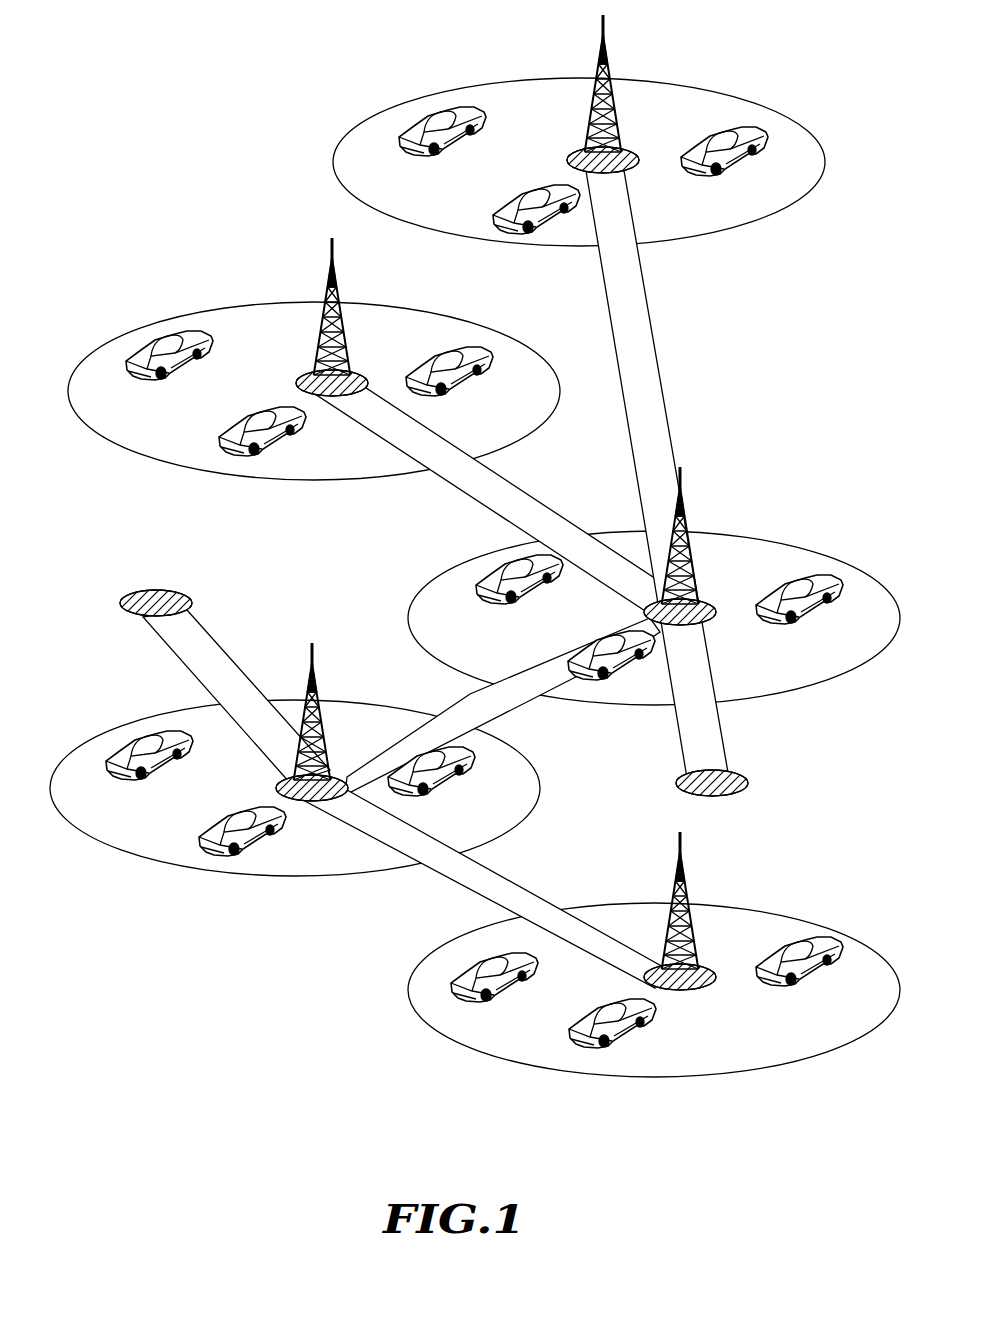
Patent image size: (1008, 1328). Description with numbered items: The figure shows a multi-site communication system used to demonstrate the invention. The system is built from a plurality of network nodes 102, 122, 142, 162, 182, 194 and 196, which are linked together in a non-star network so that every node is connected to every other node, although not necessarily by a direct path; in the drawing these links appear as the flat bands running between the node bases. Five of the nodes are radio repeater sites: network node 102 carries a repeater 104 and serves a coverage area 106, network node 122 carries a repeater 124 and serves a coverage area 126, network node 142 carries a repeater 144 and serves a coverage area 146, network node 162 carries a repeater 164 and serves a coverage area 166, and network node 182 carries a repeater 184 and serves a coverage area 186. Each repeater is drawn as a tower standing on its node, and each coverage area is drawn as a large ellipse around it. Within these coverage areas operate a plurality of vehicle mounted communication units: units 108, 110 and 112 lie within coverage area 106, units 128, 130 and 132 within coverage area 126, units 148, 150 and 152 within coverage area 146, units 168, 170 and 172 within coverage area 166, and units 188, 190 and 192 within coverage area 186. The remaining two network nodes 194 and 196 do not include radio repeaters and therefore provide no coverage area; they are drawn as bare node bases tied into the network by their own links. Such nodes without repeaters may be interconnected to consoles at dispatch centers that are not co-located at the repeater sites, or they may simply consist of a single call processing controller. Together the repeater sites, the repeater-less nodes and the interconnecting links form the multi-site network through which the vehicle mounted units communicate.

The network node 102 is at (623, 151).
The repeater 104 is at (606, 32).
The coverage area 106 is at (742, 98).
The vehicle mounted communication unit 108 is at (452, 107).
The vehicle mounted communication unit 110 is at (547, 183).
The vehicle mounted communication unit 112 is at (735, 126).
The network node 122 is at (307, 372).
The repeater 124 is at (338, 268).
The coverage area 126 is at (473, 322).
The vehicle mounted communication unit 128 is at (182, 327).
The vehicle mounted communication unit 130 is at (273, 404).
The vehicle mounted communication unit 132 is at (463, 346).
The network node 142 is at (702, 618).
The repeater 144 is at (687, 502).
The coverage area 146 is at (805, 548).
The vehicle mounted communication unit 148 is at (532, 553).
The vehicle mounted communication unit 150 is at (622, 628).
The vehicle mounted communication unit 152 is at (813, 571).
The network node 162 is at (278, 782).
The repeater 164 is at (308, 648).
The coverage area 166 is at (540, 763).
The vehicle mounted communication unit 168 is at (165, 732).
The vehicle mounted communication unit 170 is at (253, 804).
The vehicle mounted communication unit 172 is at (448, 743).
The network node 182 is at (702, 993).
The repeater 184 is at (678, 847).
The coverage area 186 is at (767, 913).
The vehicle mounted communication unit 188 is at (507, 959).
The vehicle mounted communication unit 190 is at (623, 996).
The vehicle mounted communication unit 192 is at (812, 944).
The network node 194 is at (128, 595).
The network node 196 is at (677, 776).